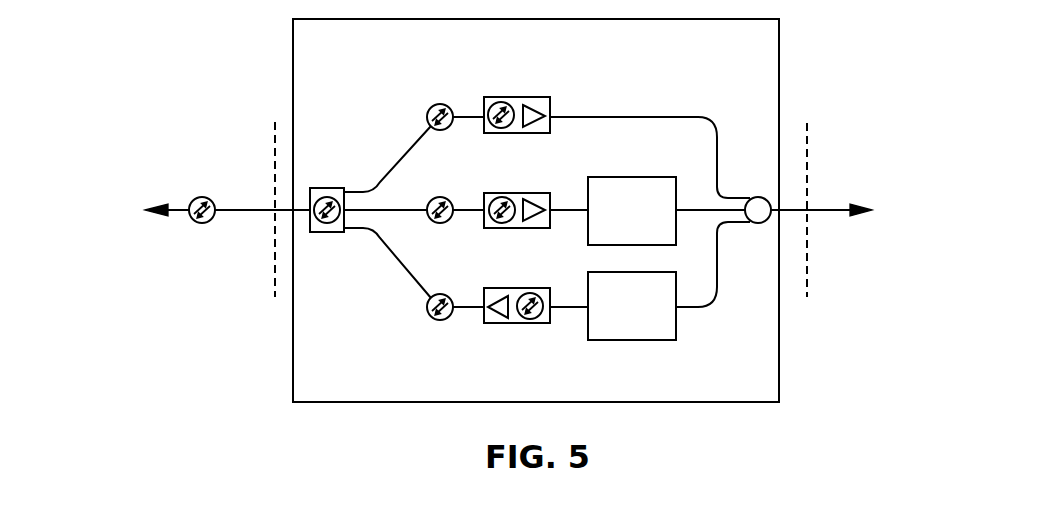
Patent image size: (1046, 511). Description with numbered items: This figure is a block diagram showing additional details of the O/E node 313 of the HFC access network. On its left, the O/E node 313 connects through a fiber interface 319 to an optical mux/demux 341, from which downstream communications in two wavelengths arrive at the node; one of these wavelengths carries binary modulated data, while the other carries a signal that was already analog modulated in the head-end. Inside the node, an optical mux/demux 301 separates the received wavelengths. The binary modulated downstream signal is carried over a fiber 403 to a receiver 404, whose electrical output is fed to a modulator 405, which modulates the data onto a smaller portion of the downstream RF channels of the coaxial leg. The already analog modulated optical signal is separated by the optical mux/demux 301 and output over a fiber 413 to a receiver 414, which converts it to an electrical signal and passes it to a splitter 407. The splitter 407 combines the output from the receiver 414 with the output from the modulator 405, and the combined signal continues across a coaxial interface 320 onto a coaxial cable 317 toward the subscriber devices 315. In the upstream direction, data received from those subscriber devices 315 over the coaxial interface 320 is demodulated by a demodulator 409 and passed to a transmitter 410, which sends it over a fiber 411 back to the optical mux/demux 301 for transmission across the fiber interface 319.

The optical mux/demux 301 is at (315, 232).
The O/E node 313 is at (779, 43).
The subscriber devices 315 is at (906, 217).
The coaxial cable 317 is at (820, 210).
The fiber interface 319 is at (274, 275).
The coaxial interface 320 is at (810, 274).
The optical mux/demux 341 is at (176, 218).
The fiber 403 is at (380, 209).
The receiver 404 is at (490, 193).
The modulator 405 is at (600, 177).
The splitter 407 is at (765, 222).
The demodulator 409 is at (596, 272).
The transmitter 410 is at (520, 288).
The fiber 411 is at (395, 256).
The fiber 413 is at (408, 134).
The receiver 414 is at (490, 97).